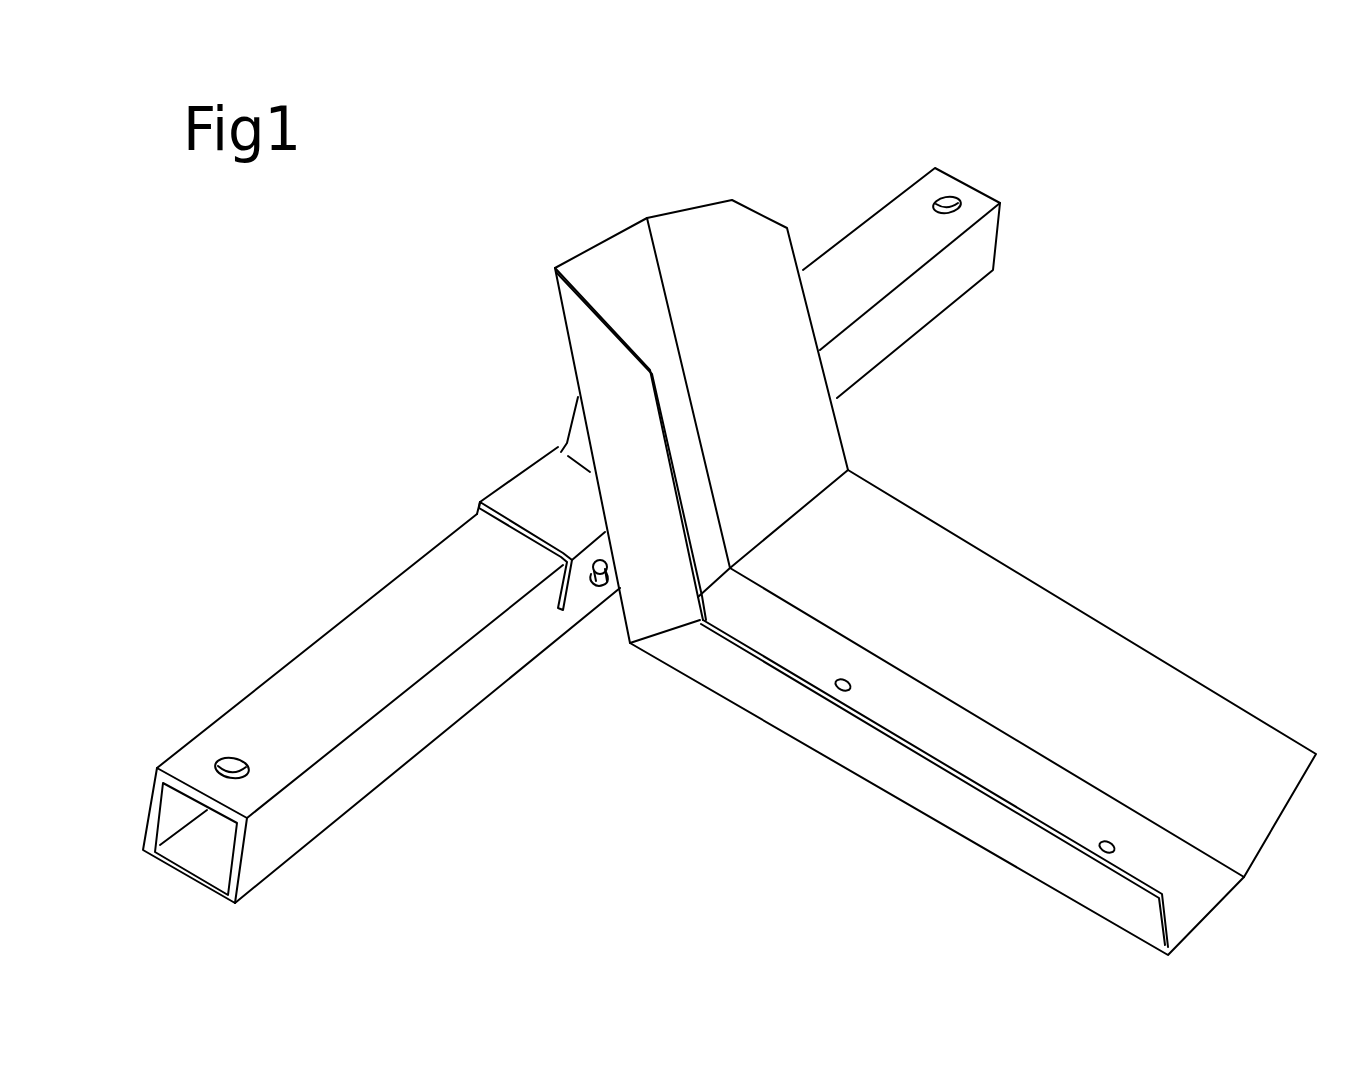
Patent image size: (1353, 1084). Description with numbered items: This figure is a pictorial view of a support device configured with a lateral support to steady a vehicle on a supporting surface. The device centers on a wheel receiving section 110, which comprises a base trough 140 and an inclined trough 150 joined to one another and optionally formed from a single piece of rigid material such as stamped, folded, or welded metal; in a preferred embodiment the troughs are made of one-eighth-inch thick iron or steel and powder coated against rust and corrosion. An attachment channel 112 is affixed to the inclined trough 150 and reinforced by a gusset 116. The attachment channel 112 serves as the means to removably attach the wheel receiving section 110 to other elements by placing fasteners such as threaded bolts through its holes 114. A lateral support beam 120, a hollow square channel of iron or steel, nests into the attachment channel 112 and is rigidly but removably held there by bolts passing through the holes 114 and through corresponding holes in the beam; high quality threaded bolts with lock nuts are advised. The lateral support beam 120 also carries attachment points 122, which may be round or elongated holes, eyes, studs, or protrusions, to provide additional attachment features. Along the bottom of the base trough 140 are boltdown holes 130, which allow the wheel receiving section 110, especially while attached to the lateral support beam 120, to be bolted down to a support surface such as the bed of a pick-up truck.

The wheel receiving section 110 is at (1099, 543).
The attachment channel 112 is at (515, 475).
The holes 114 is at (603, 587).
The gusset 116 is at (565, 405).
The lateral support beam 120 is at (397, 770).
The attachment points 122 is at (230, 752).
The boltdown holes 130 is at (838, 678).
The base trough 140 is at (1196, 681).
The inclined trough 150 is at (697, 205).